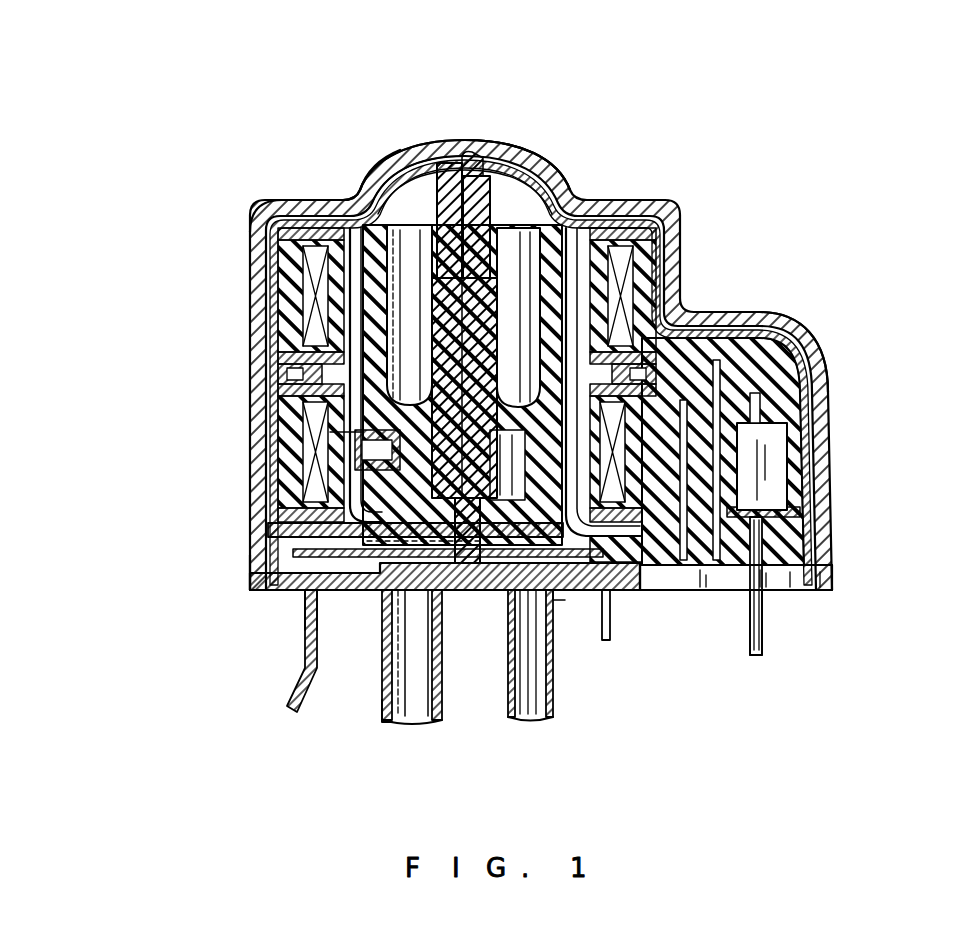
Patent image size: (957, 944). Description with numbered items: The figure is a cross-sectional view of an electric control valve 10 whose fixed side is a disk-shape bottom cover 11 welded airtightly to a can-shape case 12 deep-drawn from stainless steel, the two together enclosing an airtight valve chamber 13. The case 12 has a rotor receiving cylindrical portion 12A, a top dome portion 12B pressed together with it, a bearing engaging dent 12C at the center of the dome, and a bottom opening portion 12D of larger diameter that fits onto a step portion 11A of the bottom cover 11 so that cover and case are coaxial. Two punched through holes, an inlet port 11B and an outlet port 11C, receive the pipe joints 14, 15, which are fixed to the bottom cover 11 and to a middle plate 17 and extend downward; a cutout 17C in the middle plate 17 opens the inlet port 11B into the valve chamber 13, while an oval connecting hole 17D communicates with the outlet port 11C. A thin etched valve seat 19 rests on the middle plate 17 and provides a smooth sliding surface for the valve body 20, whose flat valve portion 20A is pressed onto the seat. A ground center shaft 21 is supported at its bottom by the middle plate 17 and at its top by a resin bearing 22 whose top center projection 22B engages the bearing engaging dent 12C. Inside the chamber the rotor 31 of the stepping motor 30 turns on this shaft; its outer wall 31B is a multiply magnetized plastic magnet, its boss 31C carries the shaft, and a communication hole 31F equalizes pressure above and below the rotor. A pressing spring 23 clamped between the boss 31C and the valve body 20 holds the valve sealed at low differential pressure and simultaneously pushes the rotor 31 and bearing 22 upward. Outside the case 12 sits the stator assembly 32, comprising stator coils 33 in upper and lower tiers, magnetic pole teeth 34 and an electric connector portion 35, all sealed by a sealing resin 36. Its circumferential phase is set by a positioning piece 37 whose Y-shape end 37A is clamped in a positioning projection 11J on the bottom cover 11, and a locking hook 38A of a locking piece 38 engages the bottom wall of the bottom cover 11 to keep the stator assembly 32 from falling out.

The electric control valve 10 is at (322, 718).
The bottom cover 11 is at (345, 596).
The step portion 11A is at (333, 605).
The through hole (inlet port) 11B is at (560, 600).
The through hole (outlet port) 11C is at (395, 722).
The positioning projection 11J is at (655, 618).
The case 12 is at (430, 142).
The rotor receiving cylindrical portion 12A is at (258, 228).
The top dome portion 12B is at (368, 175).
The bearing engaging dent 12C is at (490, 145).
The bottom opening portion 12D is at (258, 583).
The valve chamber 13 is at (525, 185).
The pipe joint 14 is at (555, 695).
The pipe joint 15 is at (440, 640).
The middle plate 17 is at (490, 595).
The cutout 17C is at (625, 650).
The connecting hole (communication hole) 17D is at (450, 690).
The valve seat 19 is at (275, 565).
The valve body 20 is at (282, 545).
The flat valve portion 20A is at (270, 470).
The center shaft 21 is at (440, 170).
The bearing 22 is at (500, 190).
The top center projection 22B is at (458, 165).
The pressing spring 23 is at (305, 432).
The stepping motor 30 is at (690, 212).
The rotor 31 is at (565, 185).
The outer wall 31B is at (400, 160).
The boss 31C is at (640, 300).
The communication hole 31F is at (292, 338).
The stator assembly 32 is at (607, 190).
The stator coil 33 is at (278, 258).
The magnetic pole teeth 34 is at (285, 295).
The electric connector portion 35 is at (767, 462).
The sealing resin 36 is at (745, 348).
The positioning piece 37 is at (668, 606).
The Y-shape end 37A is at (620, 625).
The locking piece 38 is at (293, 700).
The locking hook 38A is at (312, 620).